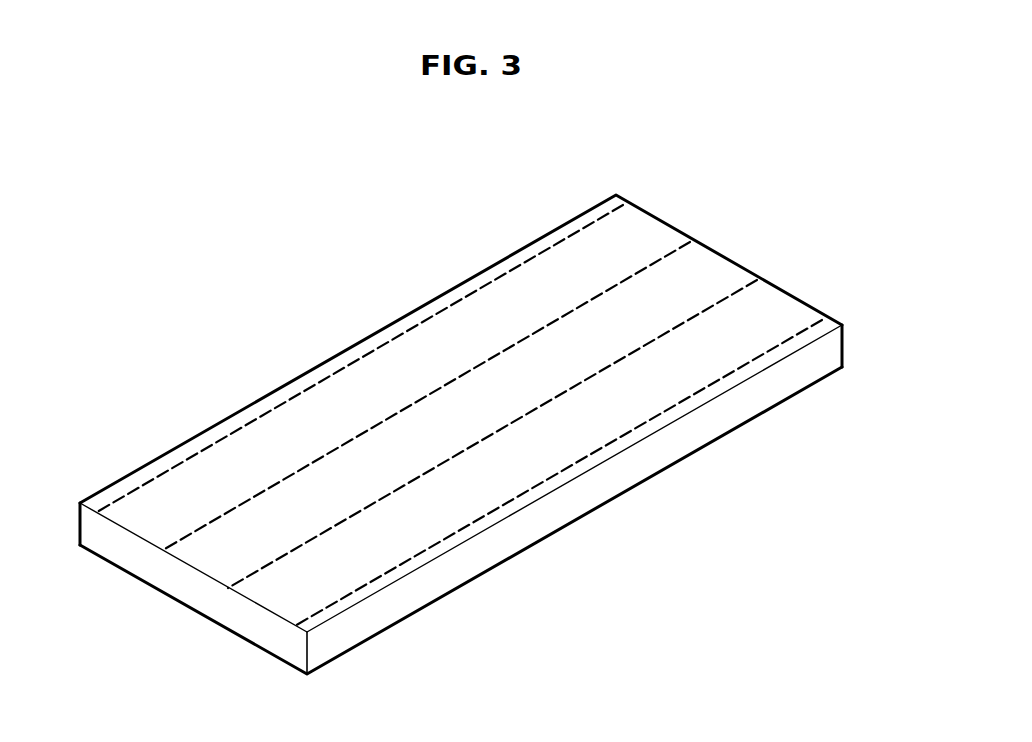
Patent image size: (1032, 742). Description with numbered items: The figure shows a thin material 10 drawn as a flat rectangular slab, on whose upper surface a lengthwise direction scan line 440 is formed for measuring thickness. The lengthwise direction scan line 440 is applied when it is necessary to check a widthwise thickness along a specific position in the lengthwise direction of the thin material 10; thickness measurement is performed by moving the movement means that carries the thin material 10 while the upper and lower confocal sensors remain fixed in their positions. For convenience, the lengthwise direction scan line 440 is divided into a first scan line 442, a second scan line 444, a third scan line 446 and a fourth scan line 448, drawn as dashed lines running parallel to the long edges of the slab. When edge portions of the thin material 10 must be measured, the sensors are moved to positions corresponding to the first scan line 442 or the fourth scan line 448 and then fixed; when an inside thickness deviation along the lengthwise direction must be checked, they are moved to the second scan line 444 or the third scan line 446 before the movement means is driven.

The thin material 10 is at (787, 378).
The lengthwise direction scan line 440 is at (877, 233).
The first scan line 442 is at (620, 203).
The second scan line 444 is at (683, 247).
The third scan line 446 is at (750, 285).
The fourth scan line 448 is at (820, 322).